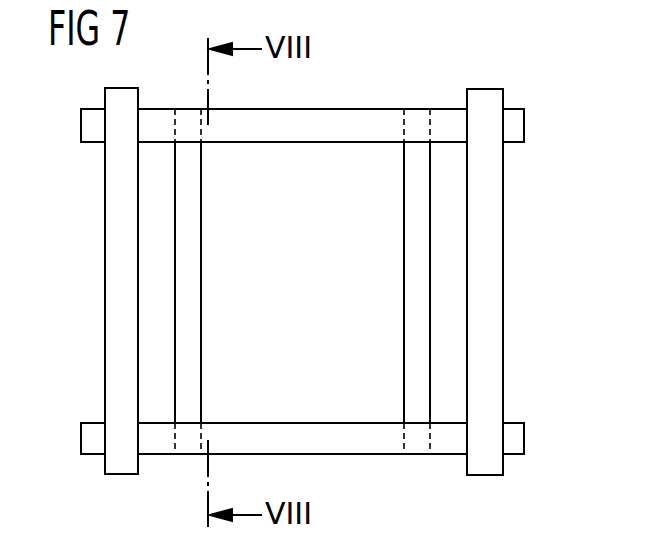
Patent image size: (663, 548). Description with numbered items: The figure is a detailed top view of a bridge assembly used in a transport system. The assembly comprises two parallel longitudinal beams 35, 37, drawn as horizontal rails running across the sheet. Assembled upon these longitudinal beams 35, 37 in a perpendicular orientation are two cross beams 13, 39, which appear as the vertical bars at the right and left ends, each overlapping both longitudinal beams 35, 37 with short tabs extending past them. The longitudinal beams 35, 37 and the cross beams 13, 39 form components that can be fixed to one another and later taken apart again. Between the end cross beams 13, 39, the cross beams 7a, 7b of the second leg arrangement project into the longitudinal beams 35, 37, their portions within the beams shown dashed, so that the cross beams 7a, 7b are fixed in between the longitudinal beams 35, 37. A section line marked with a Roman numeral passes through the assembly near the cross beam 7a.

The cross beam 7a is at (192, 268).
The cross beam 7b is at (412, 283).
The cross beam 13 is at (490, 266).
The longitudinal beam 35 is at (385, 98).
The longitudinal beam 37 is at (313, 133).
The cross beam 39 is at (113, 268).